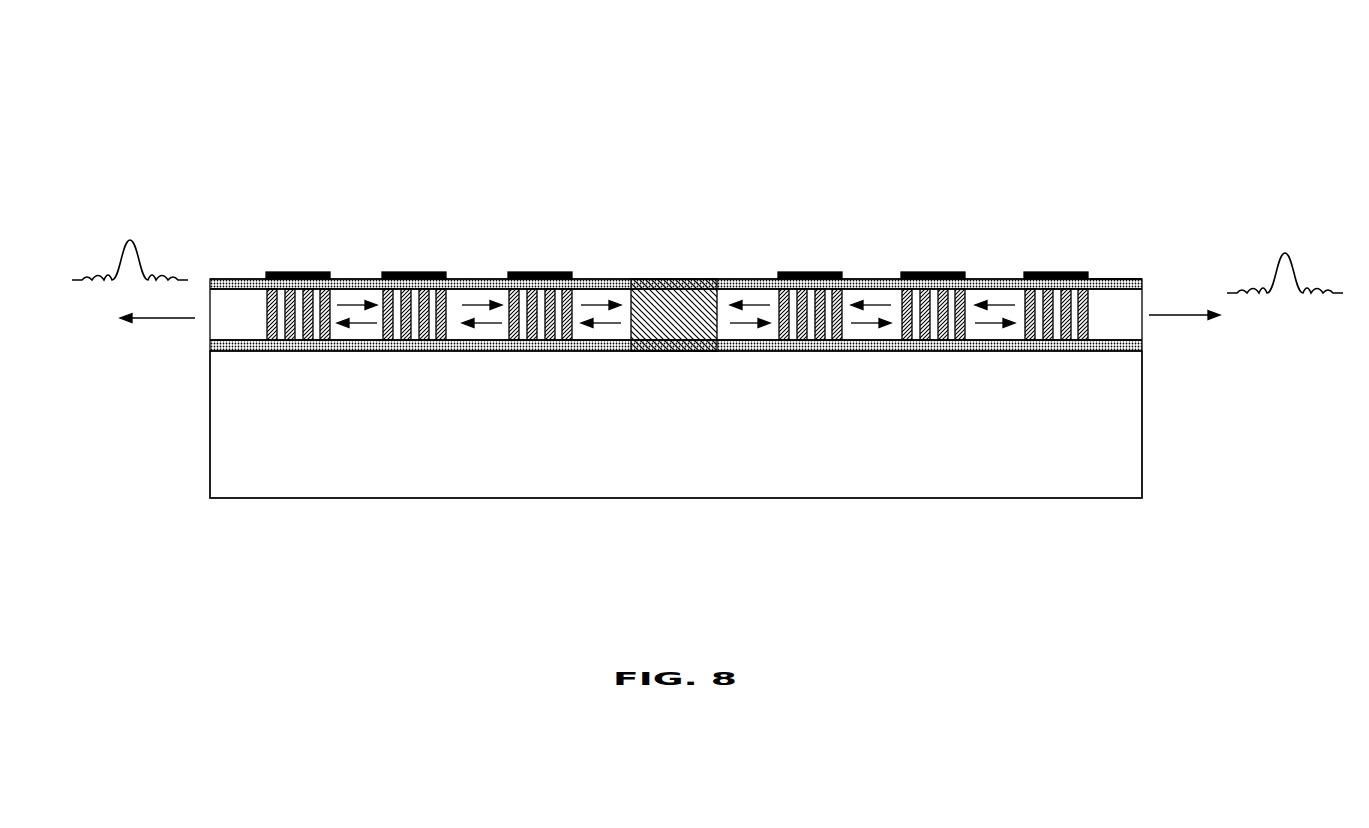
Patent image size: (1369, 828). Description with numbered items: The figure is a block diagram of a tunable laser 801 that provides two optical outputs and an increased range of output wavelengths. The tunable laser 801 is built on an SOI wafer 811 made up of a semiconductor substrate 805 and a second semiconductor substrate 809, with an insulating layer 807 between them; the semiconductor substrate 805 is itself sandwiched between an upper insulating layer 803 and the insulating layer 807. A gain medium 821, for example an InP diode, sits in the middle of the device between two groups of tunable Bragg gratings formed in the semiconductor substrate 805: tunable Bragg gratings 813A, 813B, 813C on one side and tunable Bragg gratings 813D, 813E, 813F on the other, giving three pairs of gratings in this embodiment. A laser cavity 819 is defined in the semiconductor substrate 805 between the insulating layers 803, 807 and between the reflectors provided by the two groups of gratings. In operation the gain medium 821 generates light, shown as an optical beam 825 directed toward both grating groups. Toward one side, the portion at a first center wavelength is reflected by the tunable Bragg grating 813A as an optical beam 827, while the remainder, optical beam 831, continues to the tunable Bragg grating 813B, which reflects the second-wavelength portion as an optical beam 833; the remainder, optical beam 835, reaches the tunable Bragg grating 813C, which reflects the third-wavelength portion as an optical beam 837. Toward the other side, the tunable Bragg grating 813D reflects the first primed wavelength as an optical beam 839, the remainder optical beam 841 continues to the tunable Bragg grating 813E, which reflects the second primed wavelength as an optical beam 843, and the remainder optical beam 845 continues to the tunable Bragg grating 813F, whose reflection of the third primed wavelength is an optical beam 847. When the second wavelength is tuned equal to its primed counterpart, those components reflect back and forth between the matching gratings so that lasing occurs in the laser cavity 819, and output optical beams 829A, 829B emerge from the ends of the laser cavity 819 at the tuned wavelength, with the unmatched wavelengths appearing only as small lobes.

The tunable laser 801 is at (1083, 76).
The insulating layer 803 is at (1142, 279).
The semiconductor substrate 805 is at (1143, 328).
The insulating layer 807 is at (1143, 345).
The semiconductor substrate 809 is at (1143, 437).
The SOI wafer 811 is at (1102, 193).
The tunable Bragg grating 813A is at (813, 270).
The tunable Bragg grating 813B is at (943, 270).
The tunable Bragg grating 813C is at (1066, 270).
The tunable Bragg grating 813D is at (540, 270).
The tunable Bragg grating 813E is at (418, 270).
The tunable Bragg grating 813F is at (302, 270).
The laser cavity 819 is at (717, 351).
The gain medium 821 is at (690, 279).
The optical beam 825 is at (607, 330).
The optical beam 827 is at (762, 300).
The optical beam 829A is at (1207, 300).
The optical beam 829B is at (157, 325).
The optical beam 831 is at (853, 330).
The optical beam 833 is at (882, 300).
The optical beam 835 is at (985, 330).
The optical beam 837 is at (1003, 300).
The optical beam 839 is at (598, 300).
The optical beam 841 is at (478, 330).
The optical beam 843 is at (478, 300).
The optical beam 845 is at (357, 330).
The optical beam 847 is at (357, 300).